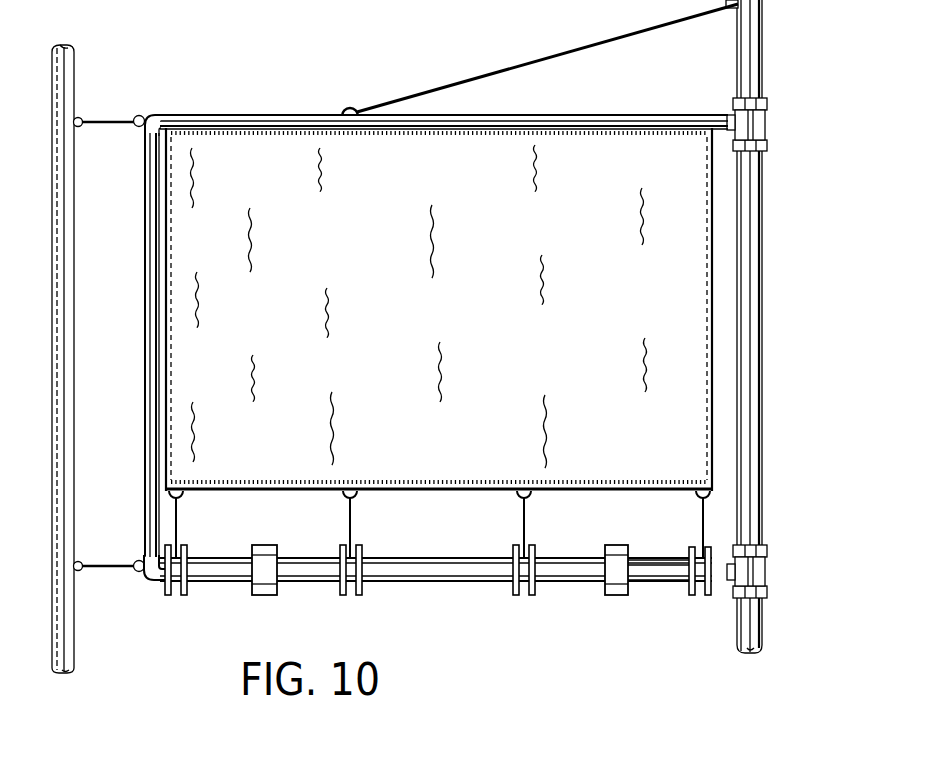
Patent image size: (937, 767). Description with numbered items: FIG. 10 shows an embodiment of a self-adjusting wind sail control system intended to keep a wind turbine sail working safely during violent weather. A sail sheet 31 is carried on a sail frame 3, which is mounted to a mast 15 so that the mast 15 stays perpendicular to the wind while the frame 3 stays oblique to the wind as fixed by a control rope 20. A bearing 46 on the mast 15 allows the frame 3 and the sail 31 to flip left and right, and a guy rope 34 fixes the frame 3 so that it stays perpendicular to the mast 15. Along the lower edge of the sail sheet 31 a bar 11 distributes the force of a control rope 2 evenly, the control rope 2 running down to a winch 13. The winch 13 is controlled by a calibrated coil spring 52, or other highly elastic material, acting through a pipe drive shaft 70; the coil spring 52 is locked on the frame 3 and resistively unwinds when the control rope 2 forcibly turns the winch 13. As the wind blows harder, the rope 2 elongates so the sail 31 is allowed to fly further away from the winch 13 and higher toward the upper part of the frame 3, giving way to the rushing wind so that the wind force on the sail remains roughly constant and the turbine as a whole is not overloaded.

The control rope 2 is at (176, 530).
The sail frame 3 is at (292, 116).
The bar 11 is at (425, 483).
The winch 13 is at (362, 565).
The mast 15 is at (73, 92).
The control rope 20 is at (105, 125).
The sail sheet 31 is at (505, 140).
The guy rope 34 is at (480, 75).
The bearing 46 is at (752, 125).
The coil spring 52 is at (265, 562).
The pipe drive shaft 70 is at (677, 568).